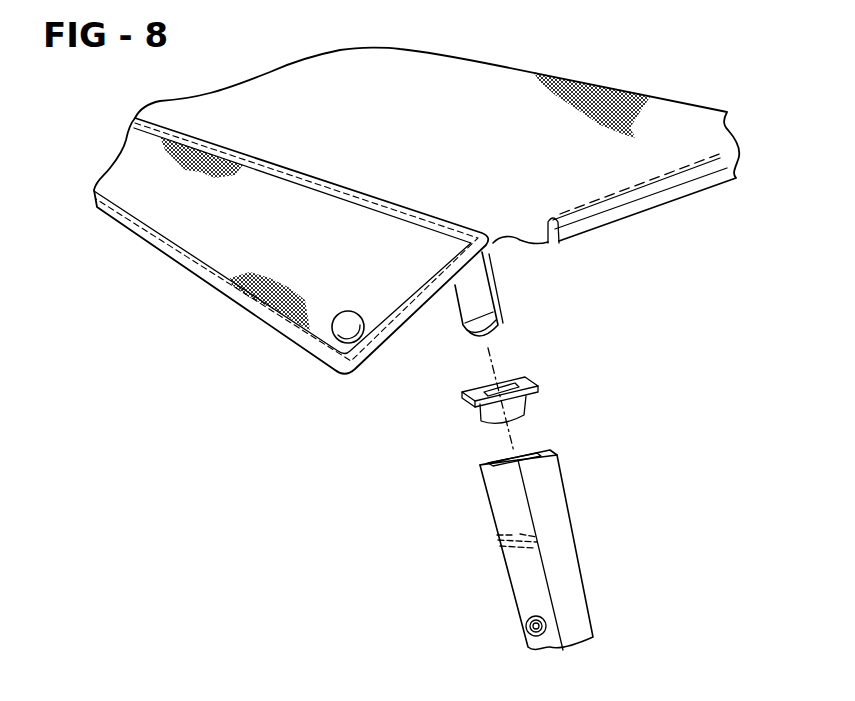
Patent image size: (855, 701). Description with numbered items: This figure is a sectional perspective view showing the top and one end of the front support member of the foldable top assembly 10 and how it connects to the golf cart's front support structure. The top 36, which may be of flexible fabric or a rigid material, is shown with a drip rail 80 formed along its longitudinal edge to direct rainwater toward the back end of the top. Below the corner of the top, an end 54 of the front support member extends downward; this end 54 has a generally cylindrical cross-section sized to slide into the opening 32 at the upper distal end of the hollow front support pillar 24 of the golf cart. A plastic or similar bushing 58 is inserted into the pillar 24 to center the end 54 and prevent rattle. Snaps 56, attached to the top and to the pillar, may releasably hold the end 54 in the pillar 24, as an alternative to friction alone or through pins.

The foldable top assembly 10 is at (647, 80).
The top 36 is at (492, 64).
The drip rail 80 is at (385, 193).
The snap 56 is at (350, 310).
The end of front support member 54 is at (499, 298).
The bushing 58 is at (540, 400).
The opening 32 is at (505, 462).
The front support pillar 24 is at (572, 530).